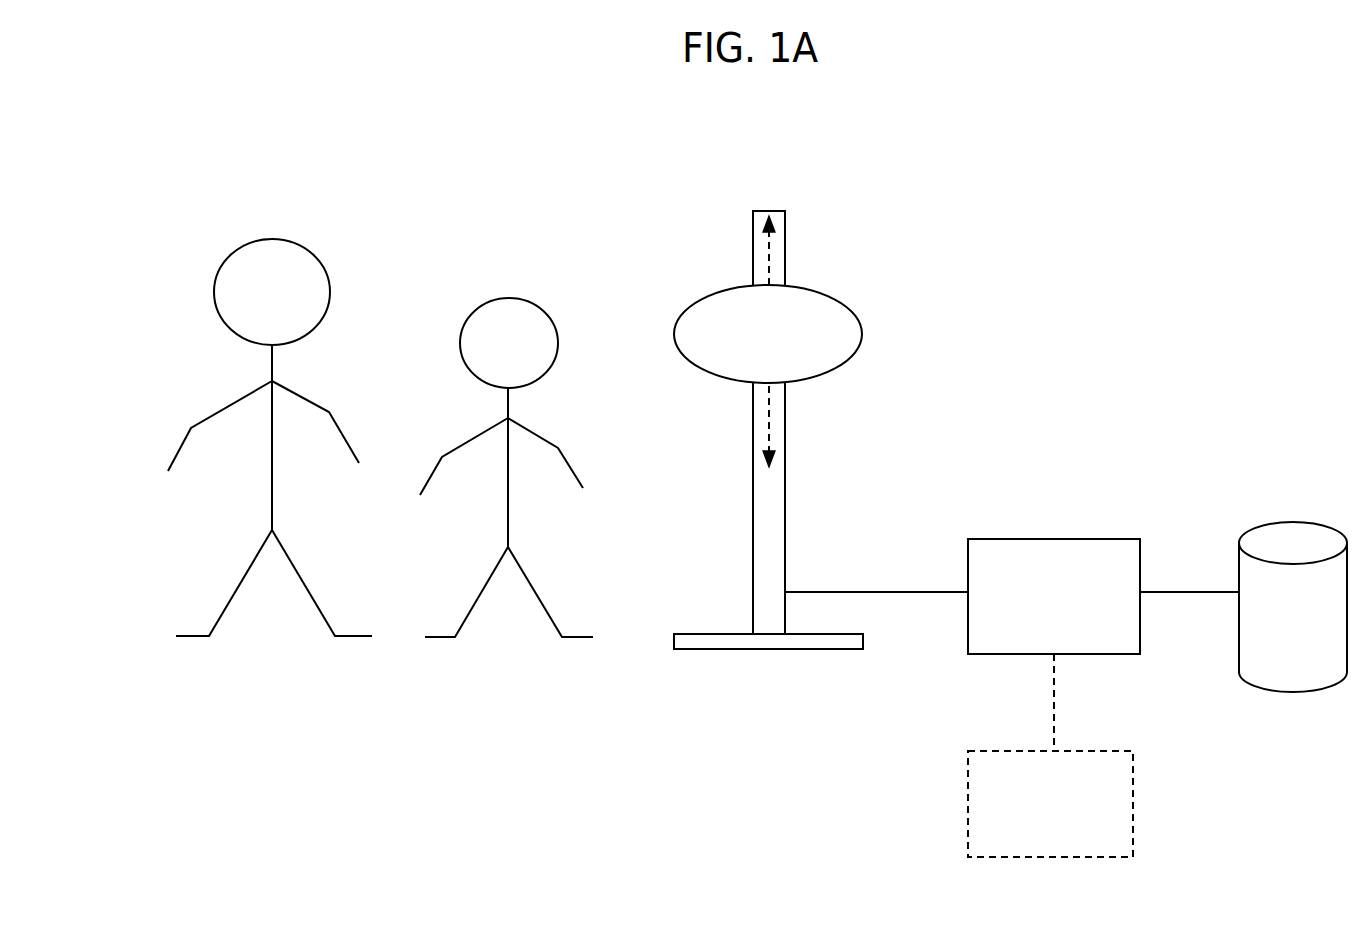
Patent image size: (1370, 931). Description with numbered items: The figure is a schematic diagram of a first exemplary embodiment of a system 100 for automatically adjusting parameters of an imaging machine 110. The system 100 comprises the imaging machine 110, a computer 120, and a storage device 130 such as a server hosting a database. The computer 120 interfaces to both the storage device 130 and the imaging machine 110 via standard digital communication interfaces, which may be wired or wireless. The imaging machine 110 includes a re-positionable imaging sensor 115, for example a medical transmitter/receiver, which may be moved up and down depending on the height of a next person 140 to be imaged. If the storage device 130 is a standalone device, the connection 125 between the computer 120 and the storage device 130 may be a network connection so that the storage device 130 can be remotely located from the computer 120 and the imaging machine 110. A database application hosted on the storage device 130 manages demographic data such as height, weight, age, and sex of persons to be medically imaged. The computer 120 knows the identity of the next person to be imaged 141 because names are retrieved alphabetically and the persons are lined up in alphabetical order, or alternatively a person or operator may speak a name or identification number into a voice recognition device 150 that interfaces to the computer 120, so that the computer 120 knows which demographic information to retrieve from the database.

The system 100 is at (1035, 197).
The imaging machine 110 is at (718, 258).
The imaging sensor 115 is at (836, 293).
The computer 120 is at (1006, 539).
The connection 125 is at (1188, 592).
The storage device 130 is at (1285, 521).
The next person 140 is at (505, 298).
The next person to be imaged 141 is at (270, 239).
The voice recognition device 150 is at (1118, 751).